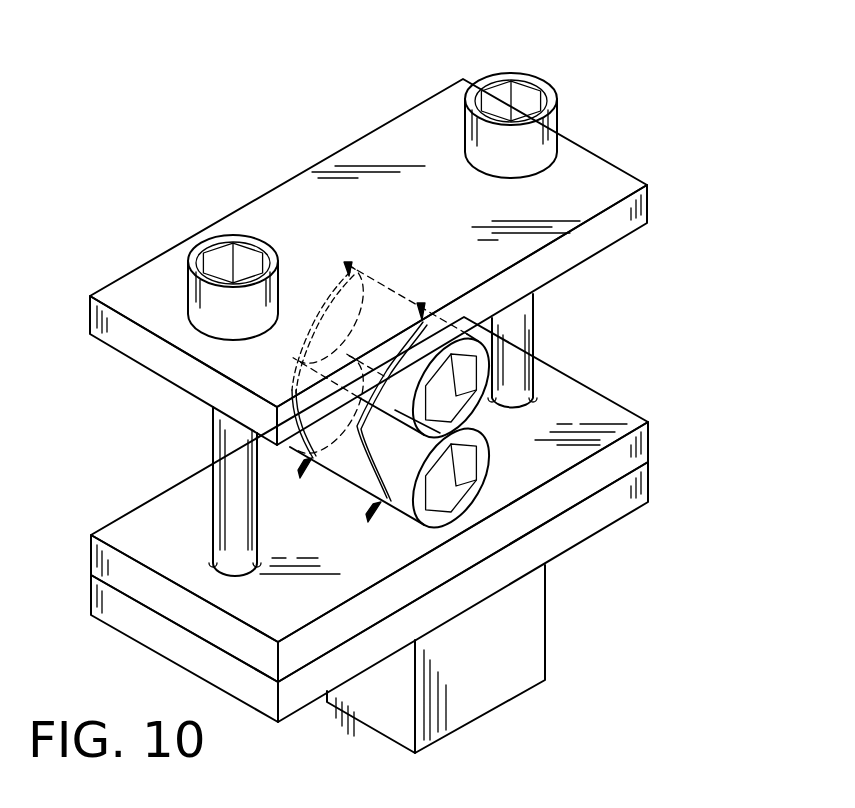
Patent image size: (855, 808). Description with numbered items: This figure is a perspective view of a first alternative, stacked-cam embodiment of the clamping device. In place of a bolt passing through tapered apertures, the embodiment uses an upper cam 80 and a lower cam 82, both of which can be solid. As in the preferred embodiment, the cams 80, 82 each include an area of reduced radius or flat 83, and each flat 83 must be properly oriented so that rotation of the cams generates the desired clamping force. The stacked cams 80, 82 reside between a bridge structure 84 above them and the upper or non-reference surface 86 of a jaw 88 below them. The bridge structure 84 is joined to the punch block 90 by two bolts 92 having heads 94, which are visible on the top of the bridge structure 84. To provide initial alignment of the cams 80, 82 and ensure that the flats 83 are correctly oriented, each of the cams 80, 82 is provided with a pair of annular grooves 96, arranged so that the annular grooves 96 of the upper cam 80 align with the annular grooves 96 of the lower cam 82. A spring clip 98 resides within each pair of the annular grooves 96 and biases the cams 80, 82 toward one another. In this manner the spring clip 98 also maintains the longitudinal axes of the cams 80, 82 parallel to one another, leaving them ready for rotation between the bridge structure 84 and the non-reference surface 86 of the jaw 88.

The upper cam 80 is at (480, 370).
The lower cam 82 is at (483, 463).
The flat 83 is at (465, 425).
The bridge structure 84 is at (282, 202).
The non-reference surface 86 is at (132, 528).
The jaw 88 is at (643, 443).
The punch block 90 is at (513, 677).
The bolts 92 is at (225, 500).
The heads 94 is at (197, 257).
The annular grooves 96 is at (349, 261).
The spring clip 98 is at (298, 384).